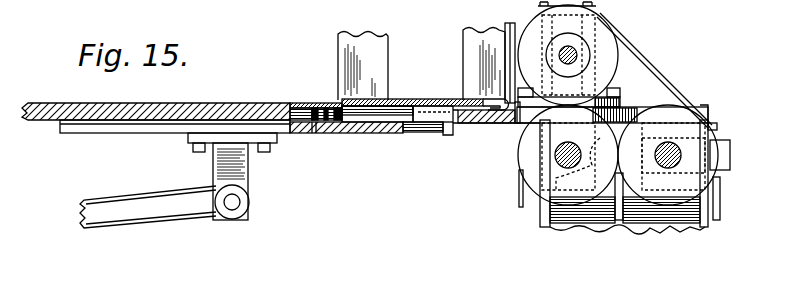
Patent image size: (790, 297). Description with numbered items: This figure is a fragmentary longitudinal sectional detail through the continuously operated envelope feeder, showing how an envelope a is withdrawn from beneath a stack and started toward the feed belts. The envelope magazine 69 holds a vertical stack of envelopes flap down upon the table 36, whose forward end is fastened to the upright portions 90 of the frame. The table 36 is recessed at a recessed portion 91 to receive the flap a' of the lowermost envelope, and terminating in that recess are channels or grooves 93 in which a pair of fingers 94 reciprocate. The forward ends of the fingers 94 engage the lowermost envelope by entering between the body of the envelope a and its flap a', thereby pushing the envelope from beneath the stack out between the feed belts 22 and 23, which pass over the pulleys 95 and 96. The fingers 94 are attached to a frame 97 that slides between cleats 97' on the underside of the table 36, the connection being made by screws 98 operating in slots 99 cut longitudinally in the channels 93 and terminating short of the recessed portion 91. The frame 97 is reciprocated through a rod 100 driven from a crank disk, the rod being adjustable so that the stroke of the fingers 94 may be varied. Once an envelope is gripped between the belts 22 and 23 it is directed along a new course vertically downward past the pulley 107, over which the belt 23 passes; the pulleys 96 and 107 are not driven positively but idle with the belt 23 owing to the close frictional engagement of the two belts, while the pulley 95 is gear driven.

The table 36 is at (183, 104).
The channels or grooves 93 is at (276, 107).
The screws 98 is at (320, 94).
The envelope magazine 69 is at (370, 44).
The envelope a is at (412, 83).
The flap a' is at (474, 91).
The frame 97 is at (346, 144).
The fingers 94 is at (413, 124).
The cleats 97' is at (437, 148).
The slots 99 is at (457, 132).
The recessed portion 91 is at (500, 123).
The pulley 96 is at (600, 42).
The feed belt 23 is at (634, 58).
The pulley 95 is at (532, 165).
The pulley 107 is at (672, 110).
The feed belt 22 is at (522, 207).
The upright portions of the frame 90 is at (707, 231).
The rod 100 is at (200, 207).